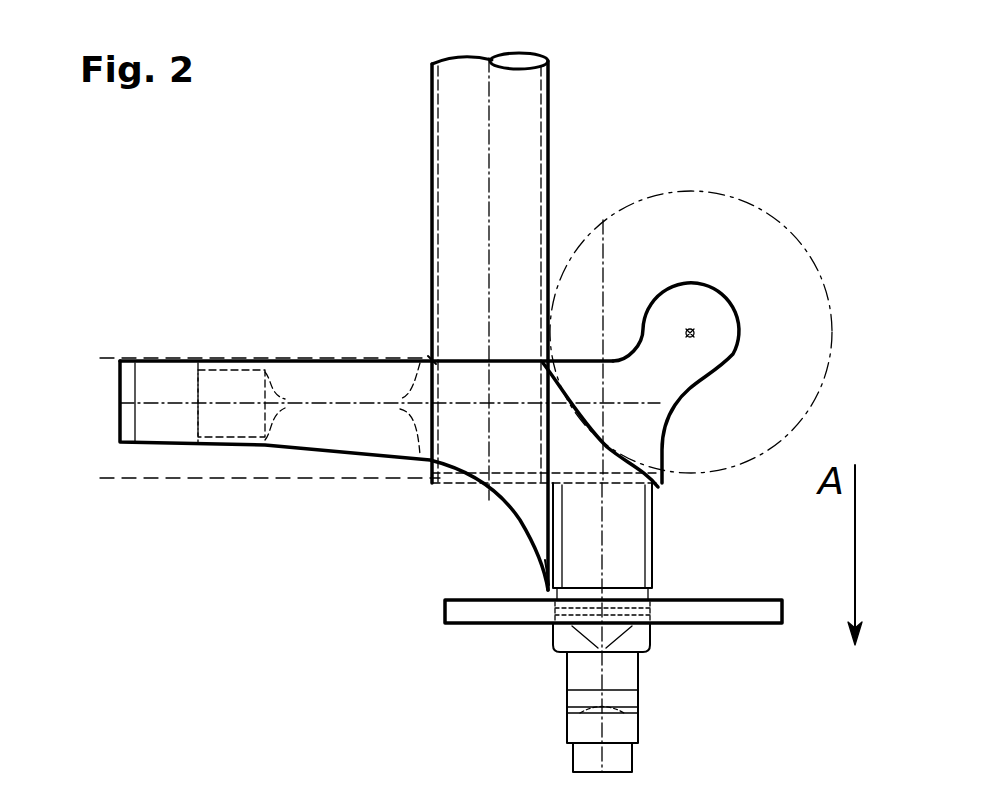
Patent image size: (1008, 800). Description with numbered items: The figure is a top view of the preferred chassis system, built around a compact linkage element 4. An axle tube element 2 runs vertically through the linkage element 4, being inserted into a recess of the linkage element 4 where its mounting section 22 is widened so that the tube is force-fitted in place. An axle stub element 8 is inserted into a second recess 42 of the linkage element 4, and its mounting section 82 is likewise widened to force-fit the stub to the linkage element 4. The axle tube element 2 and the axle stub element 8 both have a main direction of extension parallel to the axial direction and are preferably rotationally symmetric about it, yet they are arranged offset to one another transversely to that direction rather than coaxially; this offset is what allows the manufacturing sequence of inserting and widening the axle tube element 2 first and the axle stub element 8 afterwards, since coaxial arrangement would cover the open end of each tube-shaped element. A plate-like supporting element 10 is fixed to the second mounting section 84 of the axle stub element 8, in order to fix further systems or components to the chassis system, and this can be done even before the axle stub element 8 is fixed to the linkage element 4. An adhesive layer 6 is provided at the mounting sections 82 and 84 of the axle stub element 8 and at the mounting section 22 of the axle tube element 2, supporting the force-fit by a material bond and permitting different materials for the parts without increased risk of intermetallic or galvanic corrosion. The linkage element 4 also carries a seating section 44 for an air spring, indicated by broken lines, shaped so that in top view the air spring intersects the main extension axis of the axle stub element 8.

The axle tube element 2 is at (530, 155).
The linkage element 4 is at (383, 432).
The mounting section 22 is at (100, 358).
The adhesive layer 6 is at (432, 360).
The seating section 44 is at (698, 313).
The recess 42 is at (570, 547).
The mounting section 82 is at (676, 480).
The second mounting section 84 is at (650, 620).
The axle stub element 8 is at (620, 672).
The supporting element 10 is at (770, 607).